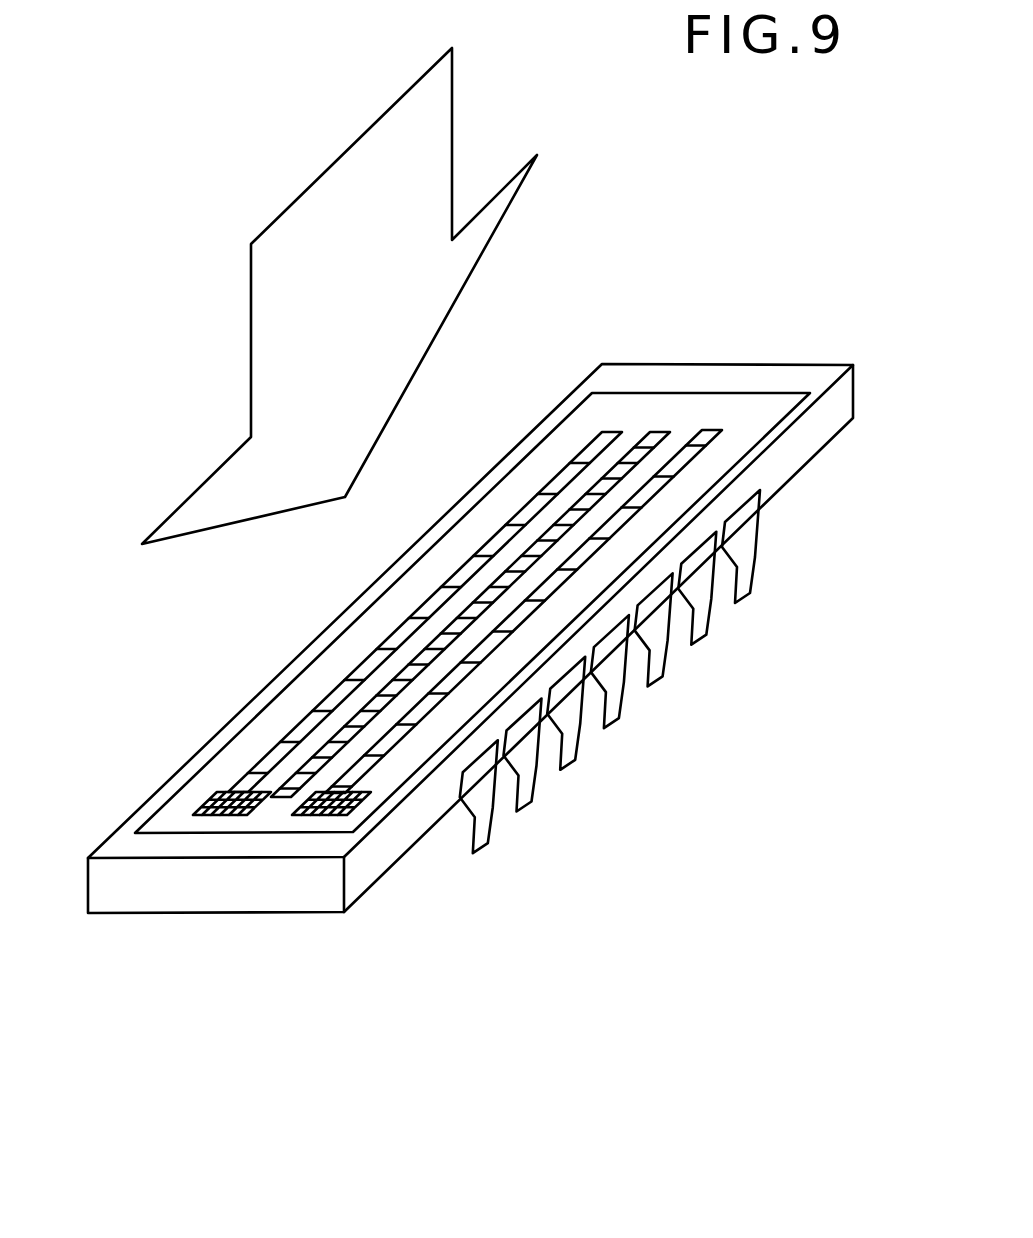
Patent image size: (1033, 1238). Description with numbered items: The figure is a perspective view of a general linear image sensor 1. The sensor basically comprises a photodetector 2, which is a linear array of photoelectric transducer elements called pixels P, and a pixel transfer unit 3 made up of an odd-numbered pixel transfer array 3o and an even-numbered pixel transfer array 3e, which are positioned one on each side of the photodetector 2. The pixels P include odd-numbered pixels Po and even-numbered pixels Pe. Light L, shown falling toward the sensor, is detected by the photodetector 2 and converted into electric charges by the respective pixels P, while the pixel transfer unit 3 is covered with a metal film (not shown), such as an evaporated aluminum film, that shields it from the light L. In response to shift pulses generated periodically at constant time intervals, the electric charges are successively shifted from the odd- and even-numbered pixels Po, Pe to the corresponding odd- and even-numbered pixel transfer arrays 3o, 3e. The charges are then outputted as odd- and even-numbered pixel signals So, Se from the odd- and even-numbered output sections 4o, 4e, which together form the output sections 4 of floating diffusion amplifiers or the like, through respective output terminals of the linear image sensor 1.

The linear image sensor 1 is at (720, 651).
The photodetector 2 is at (567, 513).
The pixel transfer unit 3 is at (828, 306).
The even-numbered pixel transfer array 3e is at (608, 428).
The odd-numbered pixel transfer array 3o is at (708, 426).
The output sections 4 is at (100, 656).
The odd-numbered output section 4o is at (308, 795).
The even-numbered output section 4e is at (213, 792).
The pixels P is at (542, 535).
The odd-numbered pixels Po is at (360, 725).
The even-numbered pixels Pe is at (360, 725).
The light L is at (266, 277).
The even-numbered pixel signal Se is at (255, 915).
The odd-numbered pixel signal So is at (405, 1065).